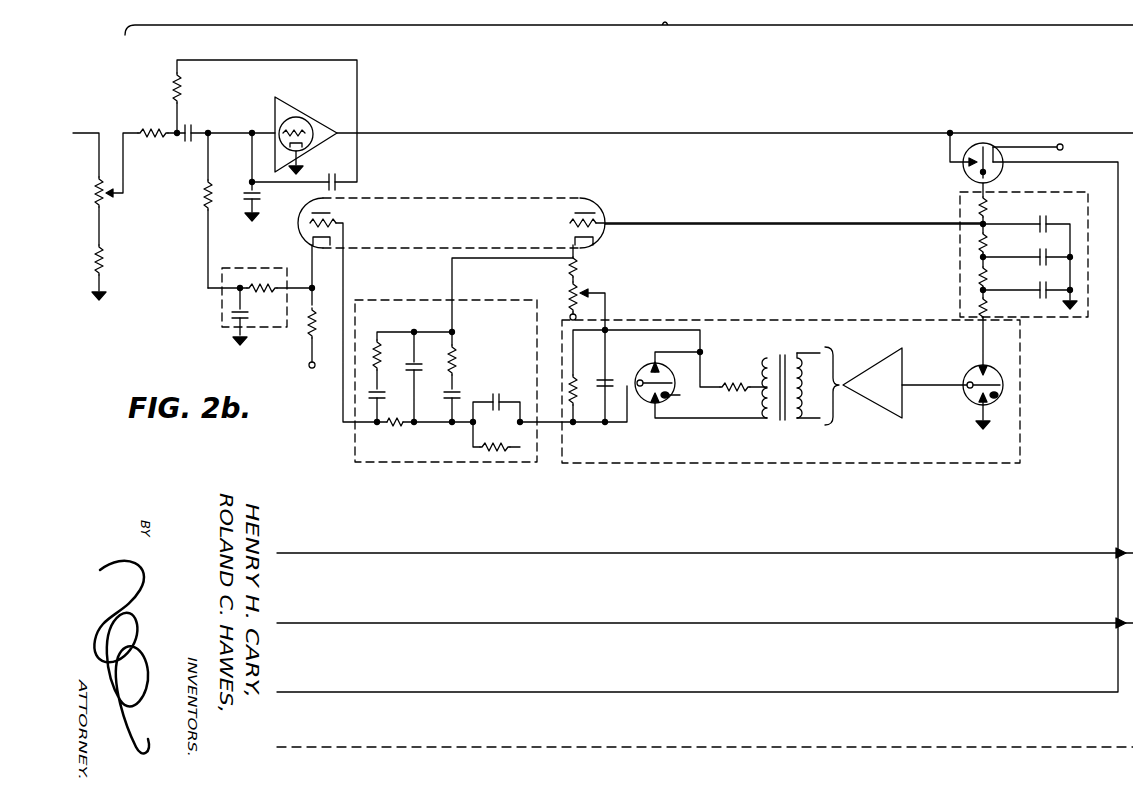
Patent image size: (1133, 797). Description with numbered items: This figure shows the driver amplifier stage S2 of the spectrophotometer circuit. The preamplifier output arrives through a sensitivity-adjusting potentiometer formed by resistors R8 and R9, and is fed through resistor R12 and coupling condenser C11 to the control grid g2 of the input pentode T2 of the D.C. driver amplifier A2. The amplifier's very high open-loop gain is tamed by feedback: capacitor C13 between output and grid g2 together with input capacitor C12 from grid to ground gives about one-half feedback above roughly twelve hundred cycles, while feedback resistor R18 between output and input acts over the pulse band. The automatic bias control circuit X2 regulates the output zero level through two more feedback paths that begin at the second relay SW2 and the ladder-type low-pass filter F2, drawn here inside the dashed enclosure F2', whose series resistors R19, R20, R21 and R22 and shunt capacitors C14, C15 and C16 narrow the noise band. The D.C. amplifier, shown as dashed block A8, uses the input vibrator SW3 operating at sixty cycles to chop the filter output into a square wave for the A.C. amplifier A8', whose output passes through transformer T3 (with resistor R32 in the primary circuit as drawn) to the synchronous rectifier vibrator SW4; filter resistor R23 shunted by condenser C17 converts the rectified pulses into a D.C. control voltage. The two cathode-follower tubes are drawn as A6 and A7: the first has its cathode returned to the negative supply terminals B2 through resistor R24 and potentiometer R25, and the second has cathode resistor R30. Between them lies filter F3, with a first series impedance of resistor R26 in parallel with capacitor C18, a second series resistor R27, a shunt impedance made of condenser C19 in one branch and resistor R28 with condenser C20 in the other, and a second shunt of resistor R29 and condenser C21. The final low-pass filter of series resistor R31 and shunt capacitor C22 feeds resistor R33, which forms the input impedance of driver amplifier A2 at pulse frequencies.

The driver amplifier stage S2 is at (629, 21).
The potentiometer resistor R8 is at (88, 192).
The potentiometer resistor R9 is at (107, 260).
The resistor R12 is at (151, 119).
The feedback resistor R18 is at (187, 88).
The coupling condenser C11 is at (192, 126).
The resistor R33 is at (198, 195).
The input capacitor C12 is at (260, 202).
The feedback capacitor C13 is at (337, 174).
The D.C. driver amplifier A2 is at (328, 130).
The input pentode T2 is at (313, 120).
The control grid g2 is at (298, 127).
The tube A6 is at (340, 198).
The tube A7 is at (598, 197).
The automatic bias control circuit X2 is at (794, 214).
The low-pass filter F2 is at (255, 287).
The series resistor R31 is at (258, 292).
The shunt capacitor C22 is at (234, 322).
The cathode resistor R30 is at (299, 329).
The battery terminal B2 is at (696, 263).
The resistor R24 is at (585, 267).
The potentiometer R25 is at (561, 297).
The filter F3 is at (440, 466).
The resistor R29 is at (388, 355).
The condenser C21 is at (387, 400).
The condenser C19 is at (422, 359).
The resistor R28 is at (462, 360).
The condenser C20 is at (459, 391).
The resistor R27 is at (398, 431).
The capacitor C18 is at (506, 396).
The resistor R26 is at (495, 440).
The amplifier unit A8 is at (791, 381).
The filter resistor R23 is at (584, 394).
The condenser C17 is at (613, 373).
The output vibrator SW4 is at (650, 410).
The resistor R32 is at (735, 377).
The transformer T3 is at (782, 426).
The amplifier A8' is at (872, 376).
The input vibrator SW3 is at (966, 402).
The second relay SW2 is at (988, 145).
The series resistor R19 is at (994, 207).
The series resistor R20 is at (994, 243).
The series resistor R21 is at (994, 277).
The series resistor R22 is at (994, 308).
The shunt capacitor C16 is at (1055, 218).
The shunt capacitor C15 is at (1055, 252).
The shunt capacitor C14 is at (1055, 285).
The filter F2' is at (1002, 254).